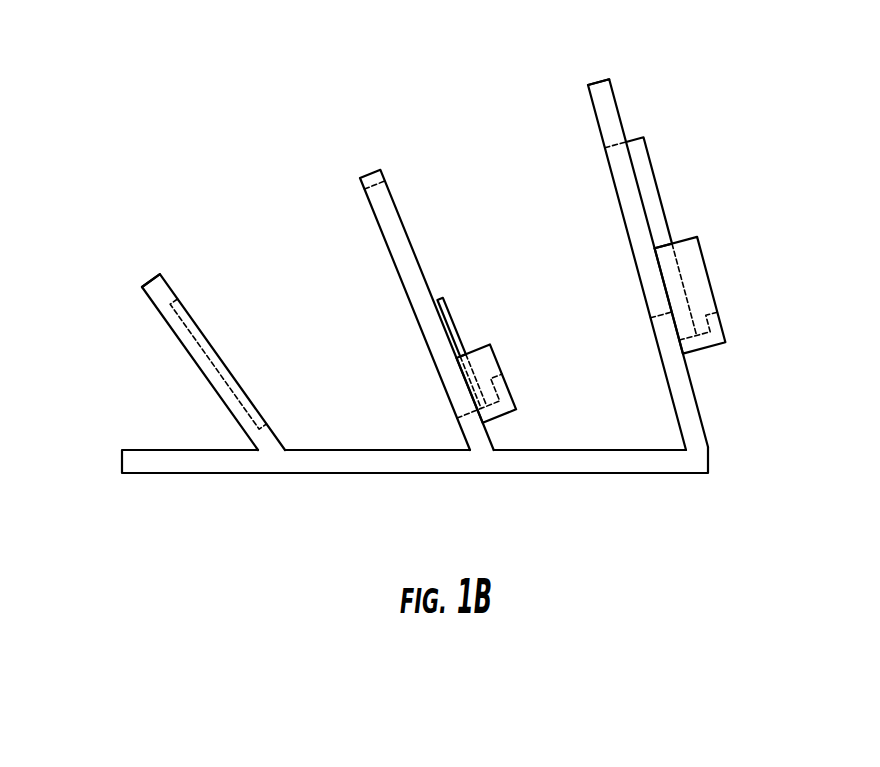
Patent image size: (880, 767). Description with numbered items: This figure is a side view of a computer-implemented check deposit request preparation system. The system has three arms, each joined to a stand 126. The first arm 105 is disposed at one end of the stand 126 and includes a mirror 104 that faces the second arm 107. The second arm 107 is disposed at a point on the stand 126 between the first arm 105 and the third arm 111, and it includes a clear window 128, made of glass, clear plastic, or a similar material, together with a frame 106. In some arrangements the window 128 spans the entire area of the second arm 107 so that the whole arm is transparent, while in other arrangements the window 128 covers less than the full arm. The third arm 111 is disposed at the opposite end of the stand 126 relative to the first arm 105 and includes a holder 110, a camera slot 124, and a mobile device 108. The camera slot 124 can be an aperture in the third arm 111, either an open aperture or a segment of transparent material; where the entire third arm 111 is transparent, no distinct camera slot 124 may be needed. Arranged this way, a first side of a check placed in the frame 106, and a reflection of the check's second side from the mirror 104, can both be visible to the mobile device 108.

The mirror 104 is at (219, 357).
The first arm 105 is at (157, 274).
The frame 106 is at (509, 392).
The second arm 107 is at (370, 171).
The mobile device 108 is at (657, 188).
The holder 110 is at (710, 285).
The third arm 111 is at (612, 90).
The camera slot 124 is at (633, 250).
The stand 126 is at (360, 462).
The window 128 is at (429, 349).